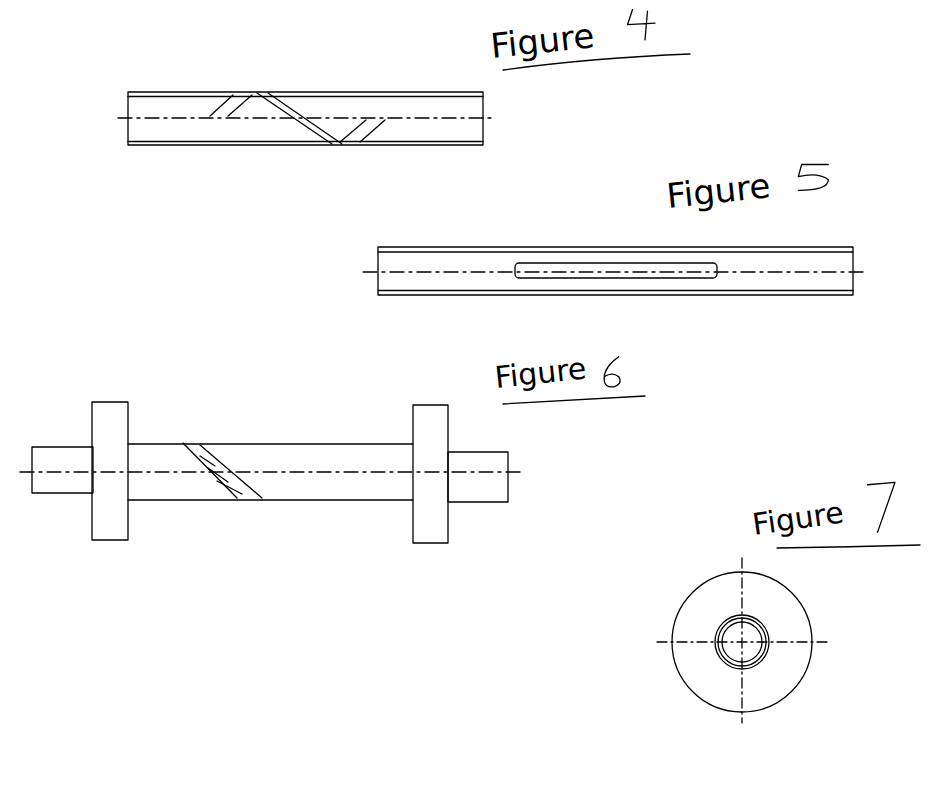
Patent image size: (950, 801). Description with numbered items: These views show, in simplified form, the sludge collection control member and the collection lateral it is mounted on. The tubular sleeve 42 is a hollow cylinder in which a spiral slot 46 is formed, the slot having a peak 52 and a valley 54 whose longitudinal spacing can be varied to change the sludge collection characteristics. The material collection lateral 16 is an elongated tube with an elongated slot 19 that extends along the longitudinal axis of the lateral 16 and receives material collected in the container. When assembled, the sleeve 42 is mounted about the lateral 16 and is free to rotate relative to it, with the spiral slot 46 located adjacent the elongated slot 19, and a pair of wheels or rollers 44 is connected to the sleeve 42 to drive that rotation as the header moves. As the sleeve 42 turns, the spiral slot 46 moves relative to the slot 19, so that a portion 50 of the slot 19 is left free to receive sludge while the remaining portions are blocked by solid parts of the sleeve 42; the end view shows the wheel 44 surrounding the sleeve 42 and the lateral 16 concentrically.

In FIG. 5, the material collection lateral 16 is at (615, 229).
In FIG. 7, the material collection lateral 16 is at (770, 705).
In FIG. 5, the elongated slot 19 is at (616, 308).
In FIG. 4, the tubular sleeve 42 is at (305, 91).
In FIG. 6, the tubular sleeve 42 is at (272, 405).
In FIG. 7, the tubular sleeve 42 is at (813, 642).
In FIG. 6, the wheels or rollers 44 is at (249, 437).
In FIG. 7, the wheels or rollers 44 is at (722, 640).
In FIG. 4, the spiral slot 46 is at (247, 165).
In FIG. 6, the spiral slot 46 is at (222, 429).
In FIG. 6, the portion of slot 50 is at (221, 524).
In FIG. 4, the peak 52 is at (292, 82).
In FIG. 4, the valley 54 is at (352, 171).